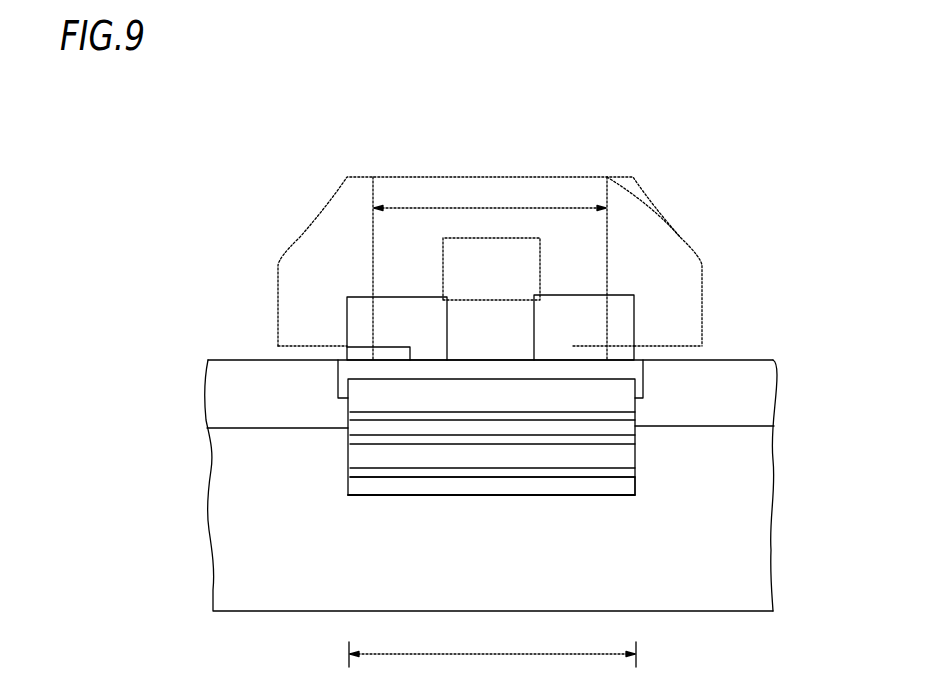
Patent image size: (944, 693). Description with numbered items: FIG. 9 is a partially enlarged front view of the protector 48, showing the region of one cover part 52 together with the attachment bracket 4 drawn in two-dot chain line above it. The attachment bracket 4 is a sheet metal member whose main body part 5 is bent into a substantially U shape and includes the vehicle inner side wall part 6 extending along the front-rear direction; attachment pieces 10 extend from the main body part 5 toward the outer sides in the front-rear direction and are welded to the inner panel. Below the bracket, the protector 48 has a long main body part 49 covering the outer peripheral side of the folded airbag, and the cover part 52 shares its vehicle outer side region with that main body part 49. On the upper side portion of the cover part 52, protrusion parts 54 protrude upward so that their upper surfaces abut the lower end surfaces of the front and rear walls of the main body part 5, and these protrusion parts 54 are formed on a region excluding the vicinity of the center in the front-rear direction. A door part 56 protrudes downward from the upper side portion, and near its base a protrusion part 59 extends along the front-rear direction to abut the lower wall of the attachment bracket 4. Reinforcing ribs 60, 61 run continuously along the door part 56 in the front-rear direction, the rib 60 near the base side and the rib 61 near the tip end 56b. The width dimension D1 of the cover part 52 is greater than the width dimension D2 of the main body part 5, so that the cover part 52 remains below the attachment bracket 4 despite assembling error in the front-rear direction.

The attachment bracket 4 is at (629, 186).
The main body part 5 is at (547, 193).
The vehicle inner side wall part 6 is at (490, 226).
The attachment piece 10 is at (316, 228).
The protector 48 is at (741, 360).
The main body part 49 is at (693, 412).
The cover part 52 is at (575, 500).
The protrusion part 54 is at (363, 300).
The door part 56 is at (347, 474).
The tip end 56b is at (423, 494).
The protrusion part 59 is at (641, 362).
The reinforcing rib 60 is at (608, 428).
The reinforcing rib 61 is at (498, 487).
The width dimension D1 is at (492, 667).
The width dimension D2 is at (457, 207).